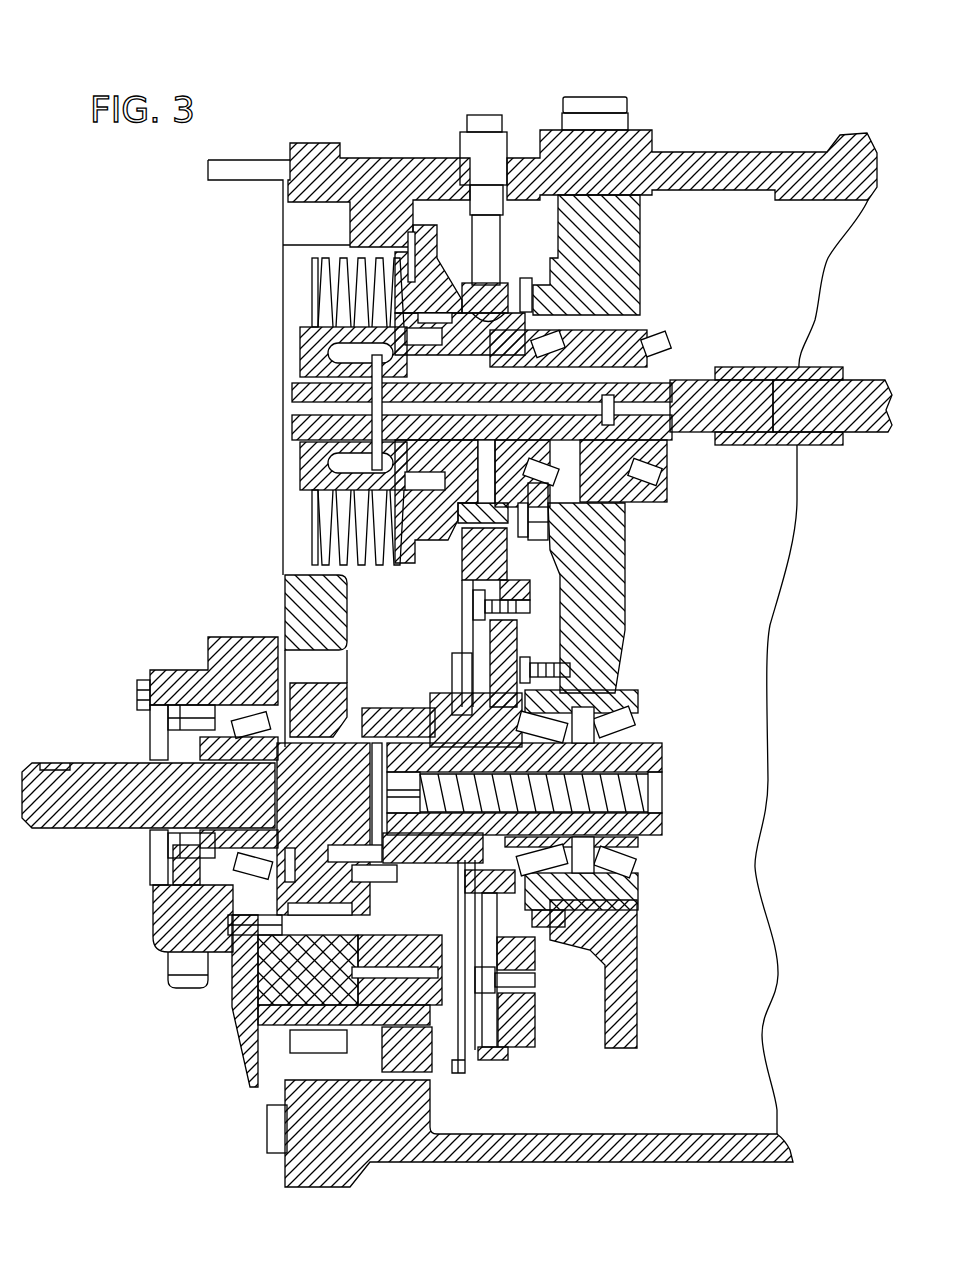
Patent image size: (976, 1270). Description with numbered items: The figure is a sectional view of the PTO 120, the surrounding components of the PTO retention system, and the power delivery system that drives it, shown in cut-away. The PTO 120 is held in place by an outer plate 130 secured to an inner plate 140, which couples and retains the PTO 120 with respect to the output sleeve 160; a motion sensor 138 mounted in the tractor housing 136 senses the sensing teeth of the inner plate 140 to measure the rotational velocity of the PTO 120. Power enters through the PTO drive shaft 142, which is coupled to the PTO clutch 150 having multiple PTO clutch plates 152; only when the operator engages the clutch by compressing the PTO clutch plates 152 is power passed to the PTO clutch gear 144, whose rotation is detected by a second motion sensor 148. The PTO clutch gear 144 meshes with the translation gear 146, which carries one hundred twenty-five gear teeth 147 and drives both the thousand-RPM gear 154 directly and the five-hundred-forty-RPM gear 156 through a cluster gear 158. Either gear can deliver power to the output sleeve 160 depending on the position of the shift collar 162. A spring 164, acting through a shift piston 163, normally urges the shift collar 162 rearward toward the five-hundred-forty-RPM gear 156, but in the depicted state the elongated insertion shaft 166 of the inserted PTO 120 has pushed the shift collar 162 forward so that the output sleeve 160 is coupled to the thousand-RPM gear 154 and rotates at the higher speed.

The PTO 120 is at (27, 828).
The outer plate 130 is at (175, 853).
The housing 136 is at (165, 670).
The motion sensor 138 is at (167, 973).
The inner plate 140 is at (167, 717).
The PTO drive shaft 142 is at (868, 374).
The PTO clutch gear 144 is at (465, 297).
The translation gear 146 is at (515, 1040).
The gear teeth 147 is at (488, 1067).
The second motion sensor 148 is at (483, 115).
The PTO clutch 150 is at (243, 244).
The PTO clutch plates 152 is at (317, 287).
The 1000 RPM gear 154 is at (397, 710).
The 540 RPM gear 156 is at (310, 685).
The cluster gear 158 is at (277, 1093).
The output sleeve 160 is at (270, 888).
The shift collar 162 is at (257, 1002).
The shift piston 163 is at (397, 785).
The spring 164 is at (627, 783).
The elongated insertion shaft 166 is at (200, 902).